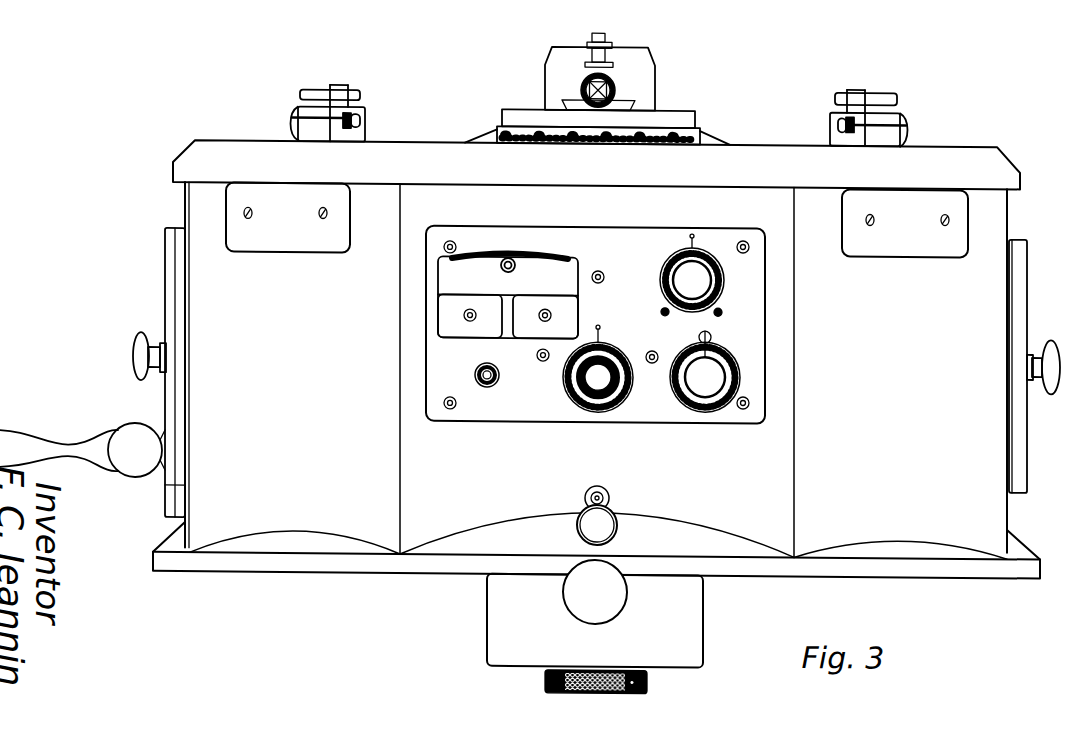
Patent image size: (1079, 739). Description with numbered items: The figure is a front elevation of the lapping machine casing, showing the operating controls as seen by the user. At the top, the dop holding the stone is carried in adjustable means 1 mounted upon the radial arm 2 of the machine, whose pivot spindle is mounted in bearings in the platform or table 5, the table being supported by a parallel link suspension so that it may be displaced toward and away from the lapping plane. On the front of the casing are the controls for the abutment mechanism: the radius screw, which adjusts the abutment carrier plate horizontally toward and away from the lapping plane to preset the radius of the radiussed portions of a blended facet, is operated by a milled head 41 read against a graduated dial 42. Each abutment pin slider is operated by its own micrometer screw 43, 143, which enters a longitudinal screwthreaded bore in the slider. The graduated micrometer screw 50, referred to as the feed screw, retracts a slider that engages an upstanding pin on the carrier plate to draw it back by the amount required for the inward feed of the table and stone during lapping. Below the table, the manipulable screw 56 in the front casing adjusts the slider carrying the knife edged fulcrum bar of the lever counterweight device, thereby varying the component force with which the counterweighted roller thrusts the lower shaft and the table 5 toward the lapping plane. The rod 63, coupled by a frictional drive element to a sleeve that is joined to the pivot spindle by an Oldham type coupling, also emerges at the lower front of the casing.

The adjustable means 1 is at (552, 75).
The radial arm 2 is at (640, 134).
The platform or table 5 is at (780, 151).
The graduated micrometer screw (feed screw) 50 is at (685, 264).
The milled head 41 is at (577, 395).
The graduated dial 42 is at (610, 398).
The micrometer screw 43 is at (690, 394).
The micrometer screw 143 is at (483, 381).
The manipulable screw 56 is at (590, 513).
The rod 63 is at (582, 595).